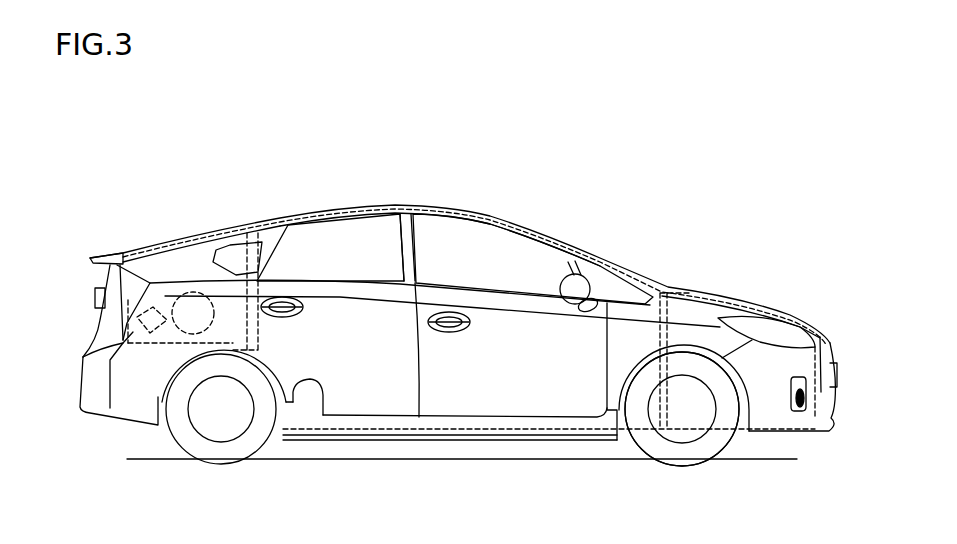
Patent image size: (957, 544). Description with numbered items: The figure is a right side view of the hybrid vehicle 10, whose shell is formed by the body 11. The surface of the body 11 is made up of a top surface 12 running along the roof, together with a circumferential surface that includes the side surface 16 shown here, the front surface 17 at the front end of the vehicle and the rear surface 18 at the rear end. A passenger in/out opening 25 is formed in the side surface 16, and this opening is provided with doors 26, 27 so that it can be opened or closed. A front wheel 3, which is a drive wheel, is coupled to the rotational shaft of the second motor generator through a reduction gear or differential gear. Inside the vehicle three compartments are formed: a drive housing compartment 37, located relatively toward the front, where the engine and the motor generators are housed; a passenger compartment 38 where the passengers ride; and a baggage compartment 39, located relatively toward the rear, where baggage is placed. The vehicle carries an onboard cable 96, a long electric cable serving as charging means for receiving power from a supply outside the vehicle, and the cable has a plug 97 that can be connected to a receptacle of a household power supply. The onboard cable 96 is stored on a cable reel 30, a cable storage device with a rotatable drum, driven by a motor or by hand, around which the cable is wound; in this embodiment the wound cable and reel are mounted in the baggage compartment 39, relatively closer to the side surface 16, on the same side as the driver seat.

The front wheel 3 is at (682, 457).
The hybrid vehicle 10 is at (391, 128).
The body 11 is at (470, 193).
The top surface 12 is at (348, 201).
The side surface 16 is at (463, 400).
The front surface 17 is at (832, 343).
The rear surface 18 is at (107, 278).
The passenger in/out opening 25 is at (327, 413).
The door 26 is at (528, 400).
The door 27 is at (382, 400).
The cable reel 30 is at (233, 350).
The drive housing compartment 37 is at (736, 298).
The passenger compartment 38 is at (540, 225).
The baggage compartment 39 is at (200, 233).
The onboard cable 96 is at (157, 340).
The plug 97 is at (122, 256).